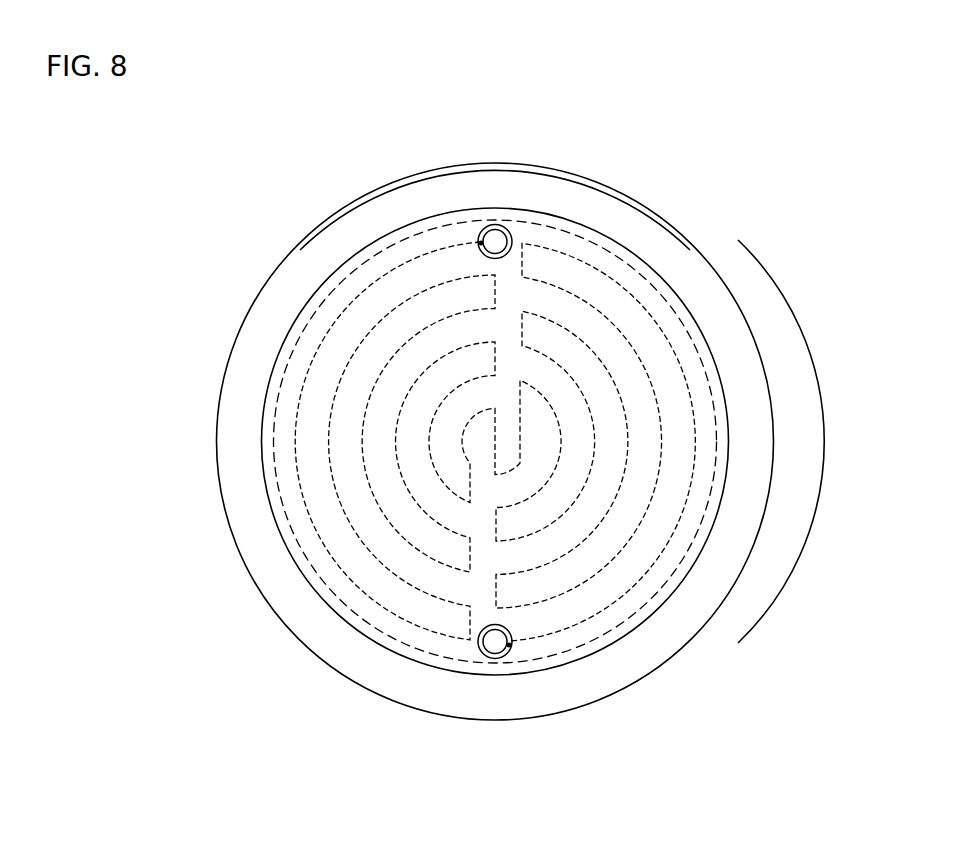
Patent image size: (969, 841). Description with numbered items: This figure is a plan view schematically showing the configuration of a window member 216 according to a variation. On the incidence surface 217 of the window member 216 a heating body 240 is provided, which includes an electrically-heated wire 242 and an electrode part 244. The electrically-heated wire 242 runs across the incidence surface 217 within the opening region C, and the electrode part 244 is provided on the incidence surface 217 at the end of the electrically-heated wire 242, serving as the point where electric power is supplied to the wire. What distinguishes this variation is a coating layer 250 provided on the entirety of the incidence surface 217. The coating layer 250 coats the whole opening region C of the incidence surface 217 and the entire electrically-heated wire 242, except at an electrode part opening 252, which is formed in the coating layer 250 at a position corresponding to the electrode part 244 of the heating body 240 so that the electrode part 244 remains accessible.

The window member 216 is at (765, 365).
The incidence surface 217 is at (762, 417).
The heating body 240 is at (550, 190).
The electrically-heated wire 242 is at (614, 276).
The electrode part 244 is at (494, 225).
The coating layer 250 is at (685, 307).
The electrode part opening 252 is at (481, 243).
The opening region C is at (281, 382).